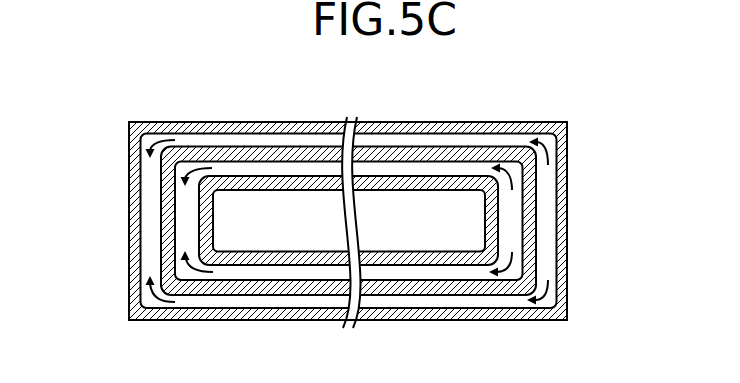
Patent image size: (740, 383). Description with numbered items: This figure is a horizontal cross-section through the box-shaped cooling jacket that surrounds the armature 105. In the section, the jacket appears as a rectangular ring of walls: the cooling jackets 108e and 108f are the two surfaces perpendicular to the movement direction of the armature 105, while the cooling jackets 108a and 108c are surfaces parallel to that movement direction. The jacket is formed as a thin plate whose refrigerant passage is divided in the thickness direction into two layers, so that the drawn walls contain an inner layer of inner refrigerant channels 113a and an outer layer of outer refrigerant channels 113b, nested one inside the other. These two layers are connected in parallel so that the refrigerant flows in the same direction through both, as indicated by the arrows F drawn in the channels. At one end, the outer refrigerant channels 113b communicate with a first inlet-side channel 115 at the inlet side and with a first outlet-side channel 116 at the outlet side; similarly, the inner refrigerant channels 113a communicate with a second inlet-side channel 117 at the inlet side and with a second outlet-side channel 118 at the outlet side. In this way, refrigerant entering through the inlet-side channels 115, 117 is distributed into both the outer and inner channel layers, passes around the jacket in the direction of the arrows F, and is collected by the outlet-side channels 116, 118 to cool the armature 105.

The armature 105 is at (550, 96).
The cooling jacket 108a is at (255, 320).
The cooling jacket 108c is at (191, 121).
The cooling jacket 108e is at (569, 283).
The cooling jacket 108f is at (130, 152).
The inner refrigerant channels 113a is at (393, 168).
The outer refrigerant channels 113b is at (458, 141).
The first inlet-side channel 115 is at (547, 247).
The first outlet-side channel 116 is at (154, 242).
The second inlet-side channel 117 is at (510, 213).
The second outlet-side channel 118 is at (188, 208).
The arrows F is at (193, 265).